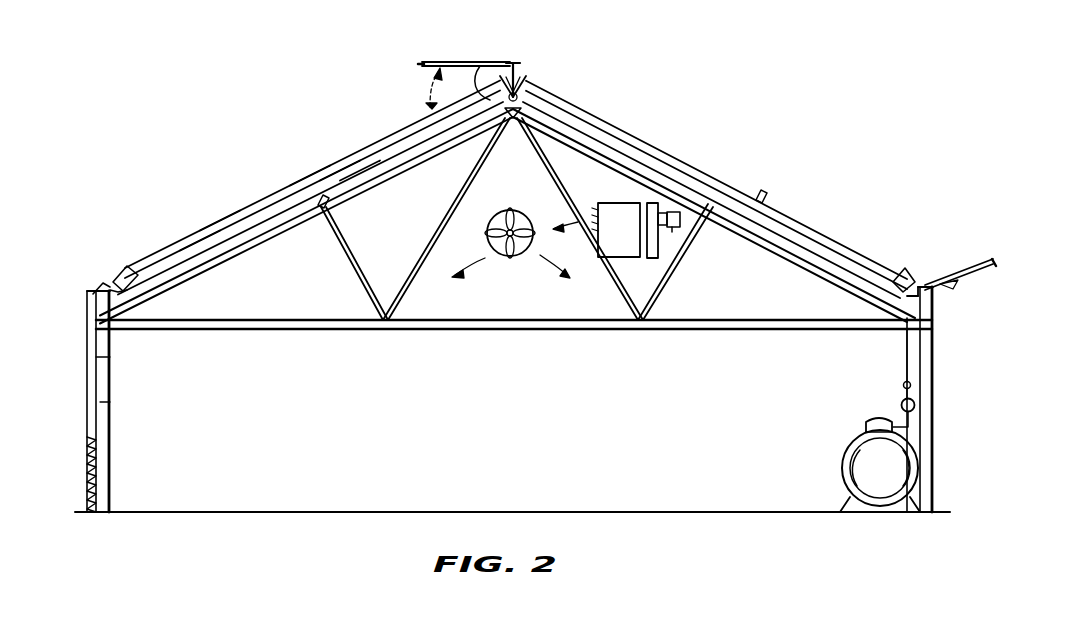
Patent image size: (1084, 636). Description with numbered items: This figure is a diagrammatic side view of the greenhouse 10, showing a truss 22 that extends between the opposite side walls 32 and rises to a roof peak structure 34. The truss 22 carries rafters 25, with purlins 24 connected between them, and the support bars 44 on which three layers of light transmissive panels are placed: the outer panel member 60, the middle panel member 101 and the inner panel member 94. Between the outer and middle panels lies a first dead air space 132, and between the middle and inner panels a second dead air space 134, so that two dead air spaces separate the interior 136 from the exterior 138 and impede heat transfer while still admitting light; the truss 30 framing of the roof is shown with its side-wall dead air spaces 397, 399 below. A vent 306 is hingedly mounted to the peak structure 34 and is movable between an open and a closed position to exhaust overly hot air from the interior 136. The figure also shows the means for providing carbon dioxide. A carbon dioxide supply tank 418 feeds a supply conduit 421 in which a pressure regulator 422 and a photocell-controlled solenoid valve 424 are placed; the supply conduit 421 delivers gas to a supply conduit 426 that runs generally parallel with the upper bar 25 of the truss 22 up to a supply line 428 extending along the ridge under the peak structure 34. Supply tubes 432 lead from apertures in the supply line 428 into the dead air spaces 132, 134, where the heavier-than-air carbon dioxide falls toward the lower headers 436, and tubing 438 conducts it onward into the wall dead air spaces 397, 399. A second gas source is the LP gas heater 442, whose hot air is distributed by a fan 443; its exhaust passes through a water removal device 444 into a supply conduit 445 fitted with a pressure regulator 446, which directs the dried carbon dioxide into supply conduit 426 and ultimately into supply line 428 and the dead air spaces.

The greenhouse 10 is at (853, 193).
The truss 22 is at (743, 333).
The purlin 24 is at (318, 215).
The rafter 25 is at (790, 240).
The roof truss 30 is at (142, 252).
The side wall 32 is at (118, 448).
The roof peak structure 34 is at (516, 62).
The support bar 44 is at (640, 160).
The outer panel member 60 is at (190, 252).
The inner panel member 94 is at (288, 190).
The middle panel member 101 is at (216, 235).
The first dead air space 132 is at (340, 170).
The second dead air space 134 is at (360, 162).
The interior 136 is at (518, 438).
The exterior 138 is at (85, 355).
The vent 306 is at (452, 58).
The dead air space of side or end wall 397 is at (103, 358).
The dead air space of side or end wall 399 is at (103, 402).
The carbon dioxide supply tank 418 is at (870, 463).
The supply conduit 421 is at (903, 350).
The pressure regulator 422 is at (901, 406).
The solenoid valve 424 is at (903, 385).
The supply conduit 426 is at (815, 260).
The supply line 428 is at (520, 102).
The supply tube 432 is at (472, 86).
The lower header 436 is at (130, 272).
The tubing 438 is at (109, 292).
The heater 442 is at (616, 205).
The fan 443 is at (501, 262).
The water removal device 444 is at (655, 205).
The supply conduit 445 is at (680, 203).
The pressure regulator 446 is at (672, 235).